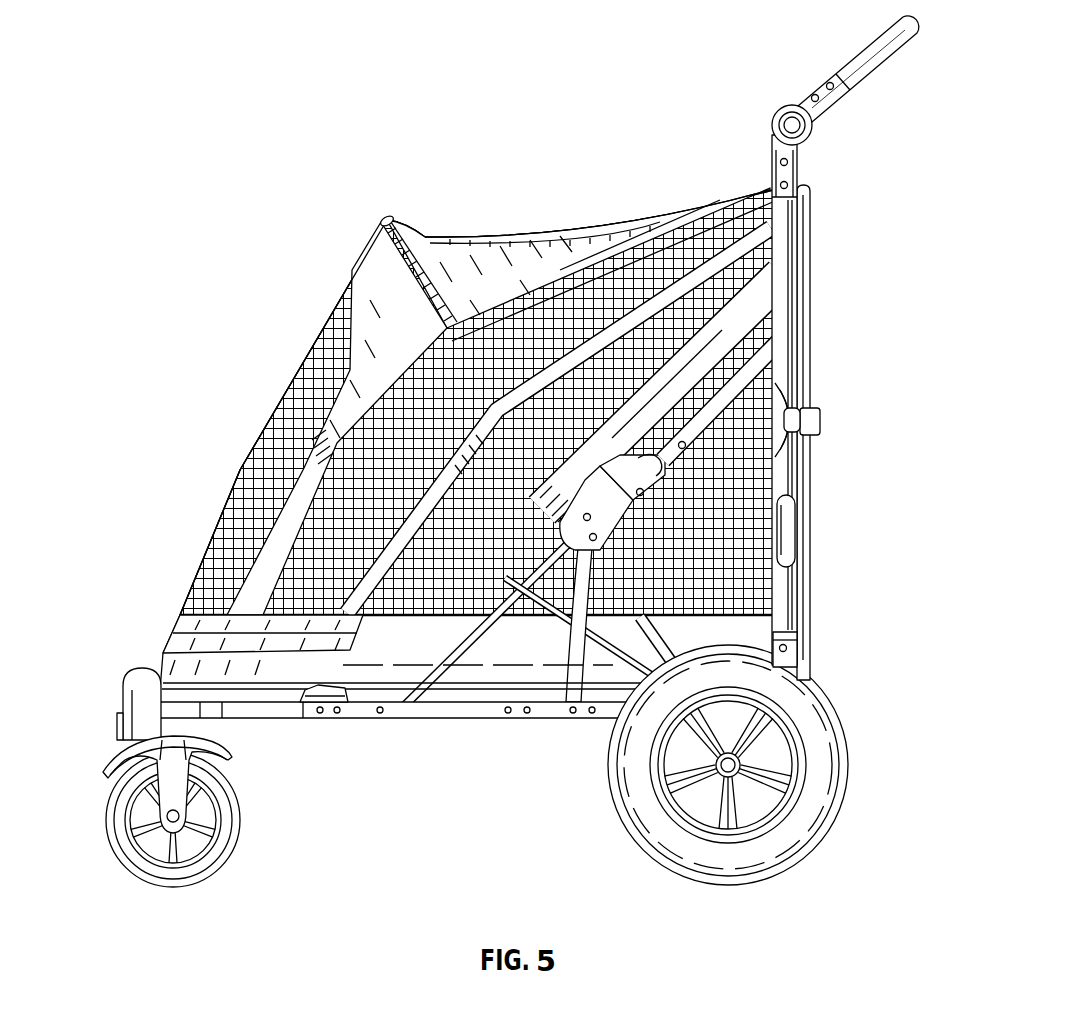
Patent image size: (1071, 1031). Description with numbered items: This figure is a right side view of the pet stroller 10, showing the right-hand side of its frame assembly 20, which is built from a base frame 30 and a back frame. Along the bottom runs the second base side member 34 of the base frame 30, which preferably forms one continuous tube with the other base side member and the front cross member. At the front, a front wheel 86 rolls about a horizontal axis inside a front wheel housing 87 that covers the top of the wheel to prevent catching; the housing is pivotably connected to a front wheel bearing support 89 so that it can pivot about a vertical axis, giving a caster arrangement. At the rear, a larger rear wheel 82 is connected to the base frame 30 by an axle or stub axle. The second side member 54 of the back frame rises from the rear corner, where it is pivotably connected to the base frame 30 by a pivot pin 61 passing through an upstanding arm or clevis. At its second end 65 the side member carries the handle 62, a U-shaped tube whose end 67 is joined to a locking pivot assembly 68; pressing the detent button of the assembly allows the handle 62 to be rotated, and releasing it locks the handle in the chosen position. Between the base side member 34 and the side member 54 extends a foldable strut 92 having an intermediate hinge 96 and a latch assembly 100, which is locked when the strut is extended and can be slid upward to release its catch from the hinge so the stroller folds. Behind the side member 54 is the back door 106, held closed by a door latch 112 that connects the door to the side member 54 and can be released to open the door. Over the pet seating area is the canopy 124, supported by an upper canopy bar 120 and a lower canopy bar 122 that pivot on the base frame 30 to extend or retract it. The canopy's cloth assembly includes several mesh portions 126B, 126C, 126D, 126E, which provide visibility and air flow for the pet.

The pet stroller 10 is at (343, 119).
The frame assembly 20 is at (835, 670).
The base frame 30 is at (254, 740).
The second base side member 34 is at (368, 720).
The second side member 54 is at (789, 553).
The pivot pin 61 is at (787, 648).
The handle 62 is at (890, 62).
The second end 65 is at (772, 158).
The end of handle 67 is at (833, 100).
The locking pivot assembly 68 is at (813, 138).
The rear wheel 82 is at (718, 885).
The front wheel 86 is at (165, 890).
The front wheel housing 87 is at (110, 762).
The front wheel bearing support 89 is at (133, 668).
The foldable strut 92 is at (447, 673).
The intermediate hinge 96 is at (582, 555).
The latch assembly 100 is at (778, 328).
The back door 106 is at (813, 525).
The door latch 112 is at (827, 414).
The upper canopy bar 120 is at (380, 219).
The lower canopy bar 122 is at (340, 703).
The canopy 124 is at (423, 228).
The mesh portion 126B is at (505, 236).
The mesh portion 126C is at (762, 488).
The mesh portion 126D is at (220, 512).
The mesh portion 126E is at (320, 468).